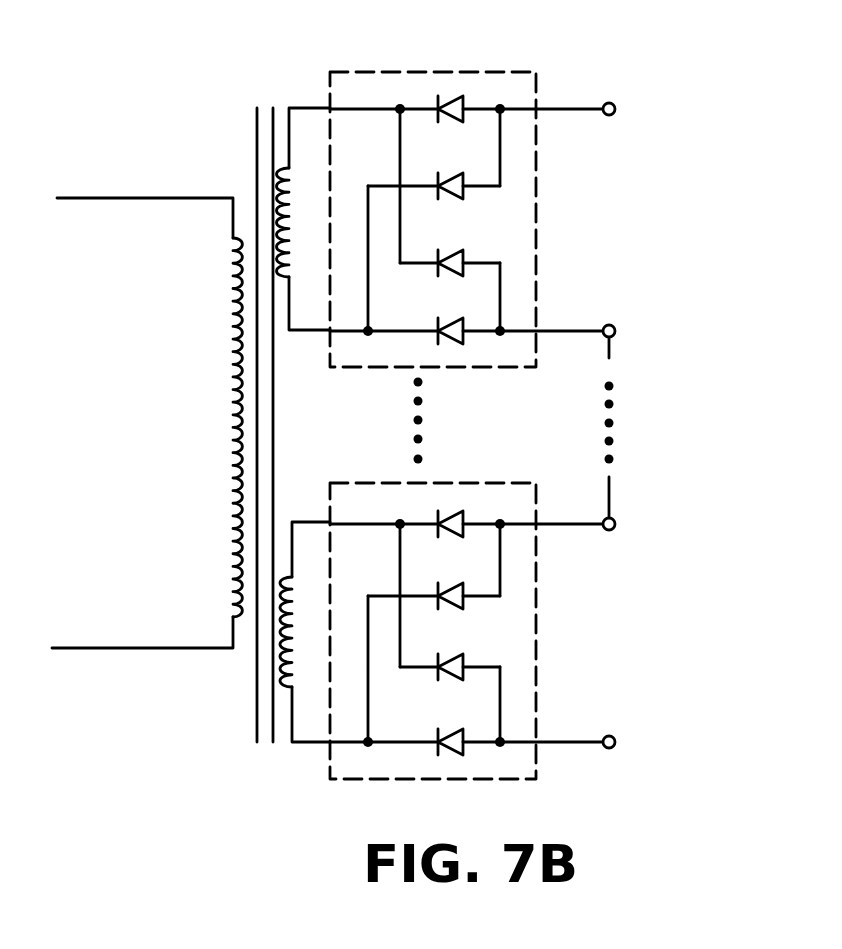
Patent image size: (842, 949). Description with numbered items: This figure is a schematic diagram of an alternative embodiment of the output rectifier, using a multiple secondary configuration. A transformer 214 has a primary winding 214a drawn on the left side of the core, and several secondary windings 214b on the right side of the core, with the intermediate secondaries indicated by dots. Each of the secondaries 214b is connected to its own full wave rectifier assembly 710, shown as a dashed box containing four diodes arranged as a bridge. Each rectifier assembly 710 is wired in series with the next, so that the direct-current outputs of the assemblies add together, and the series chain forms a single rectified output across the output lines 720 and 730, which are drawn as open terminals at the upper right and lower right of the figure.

The transformer 214 is at (191, 393).
The primary winding 214a is at (235, 390).
The secondary winding 214b is at (280, 197).
The full wave rectifier assembly 710 is at (480, 72).
The output line 720 is at (651, 90).
The output line 730 is at (614, 737).